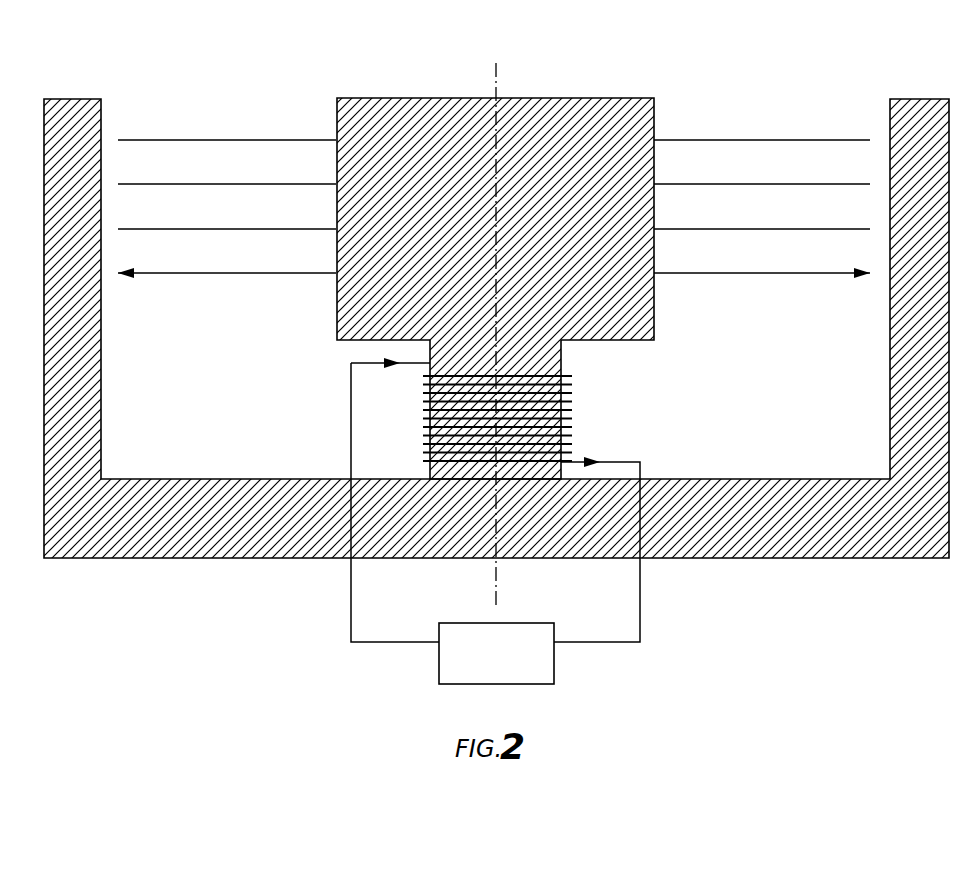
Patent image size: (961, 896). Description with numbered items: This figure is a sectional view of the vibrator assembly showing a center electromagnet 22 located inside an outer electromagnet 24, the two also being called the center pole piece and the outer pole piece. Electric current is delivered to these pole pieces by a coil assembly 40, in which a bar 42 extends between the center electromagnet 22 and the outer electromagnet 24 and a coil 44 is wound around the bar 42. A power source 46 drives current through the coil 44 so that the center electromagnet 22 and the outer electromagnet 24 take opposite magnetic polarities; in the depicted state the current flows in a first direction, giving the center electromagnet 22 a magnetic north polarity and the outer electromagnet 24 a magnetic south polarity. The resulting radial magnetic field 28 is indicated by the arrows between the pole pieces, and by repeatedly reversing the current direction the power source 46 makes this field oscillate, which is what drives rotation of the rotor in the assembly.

The center electromagnet 22 is at (571, 98).
The outer electromagnet 24 is at (81, 99).
The oscillating radial magnetic field 28 is at (225, 138).
The coil assembly 40 is at (680, 620).
The bar 42 is at (561, 363).
The coil 44 is at (572, 405).
The power source 46 is at (439, 668).